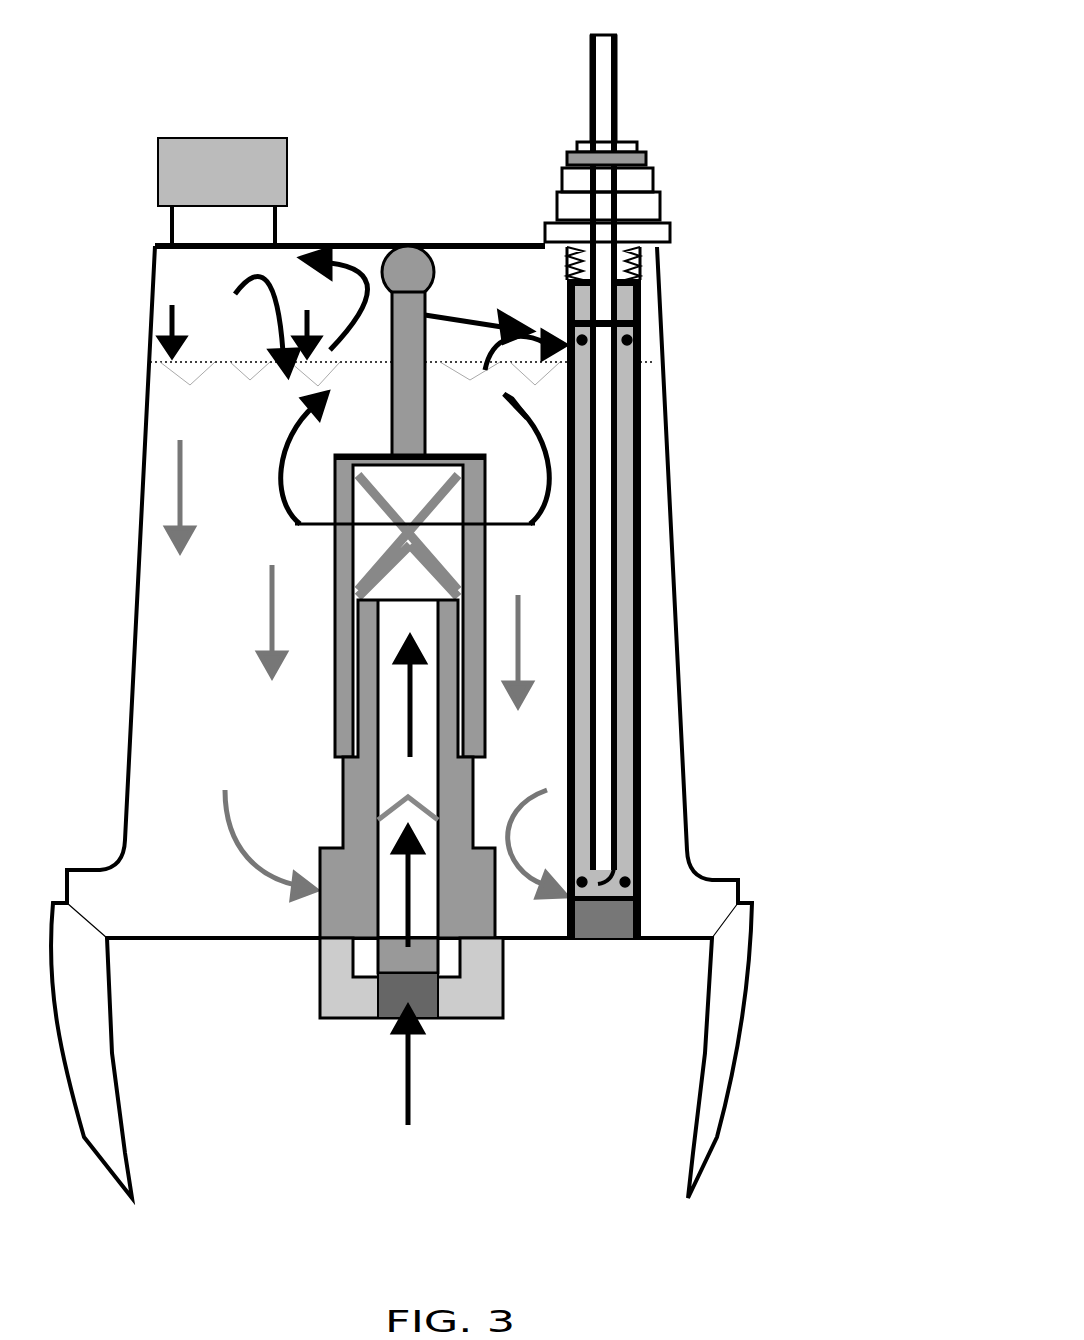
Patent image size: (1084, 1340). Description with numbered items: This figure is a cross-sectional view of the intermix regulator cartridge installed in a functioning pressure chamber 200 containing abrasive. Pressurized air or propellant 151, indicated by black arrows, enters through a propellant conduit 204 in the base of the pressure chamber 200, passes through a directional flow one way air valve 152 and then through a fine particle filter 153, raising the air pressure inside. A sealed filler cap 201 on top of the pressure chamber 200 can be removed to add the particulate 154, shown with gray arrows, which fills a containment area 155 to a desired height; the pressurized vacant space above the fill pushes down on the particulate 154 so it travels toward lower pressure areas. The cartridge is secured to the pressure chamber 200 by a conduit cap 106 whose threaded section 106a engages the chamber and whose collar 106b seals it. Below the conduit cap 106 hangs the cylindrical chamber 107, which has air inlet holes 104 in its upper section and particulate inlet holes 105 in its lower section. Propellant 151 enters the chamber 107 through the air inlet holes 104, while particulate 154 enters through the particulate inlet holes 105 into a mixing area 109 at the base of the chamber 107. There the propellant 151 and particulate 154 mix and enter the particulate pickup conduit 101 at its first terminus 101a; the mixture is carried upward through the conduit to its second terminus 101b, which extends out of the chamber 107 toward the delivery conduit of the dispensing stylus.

The pressure chamber 200 is at (125, 602).
The filler cap 201 is at (155, 145).
The propellant conduit 204 is at (443, 997).
The particulate inlet holes 105 is at (652, 903).
The propellant 151 is at (387, 1079).
The directional flow one way air valve 152 is at (432, 794).
The fine particle filter 153 is at (415, 501).
The particulate 154 is at (240, 672).
The containment area 155 is at (237, 299).
The particulate pickup conduit 101 is at (617, 690).
The first terminus 101a is at (640, 877).
The second terminus 101b is at (617, 35).
The air inlet holes 104 is at (640, 332).
The conduit cap 106 is at (562, 177).
The threaded section 106a is at (638, 255).
The collar 106b is at (672, 230).
The chamber 107 is at (640, 600).
The mixing area 109 is at (640, 857).